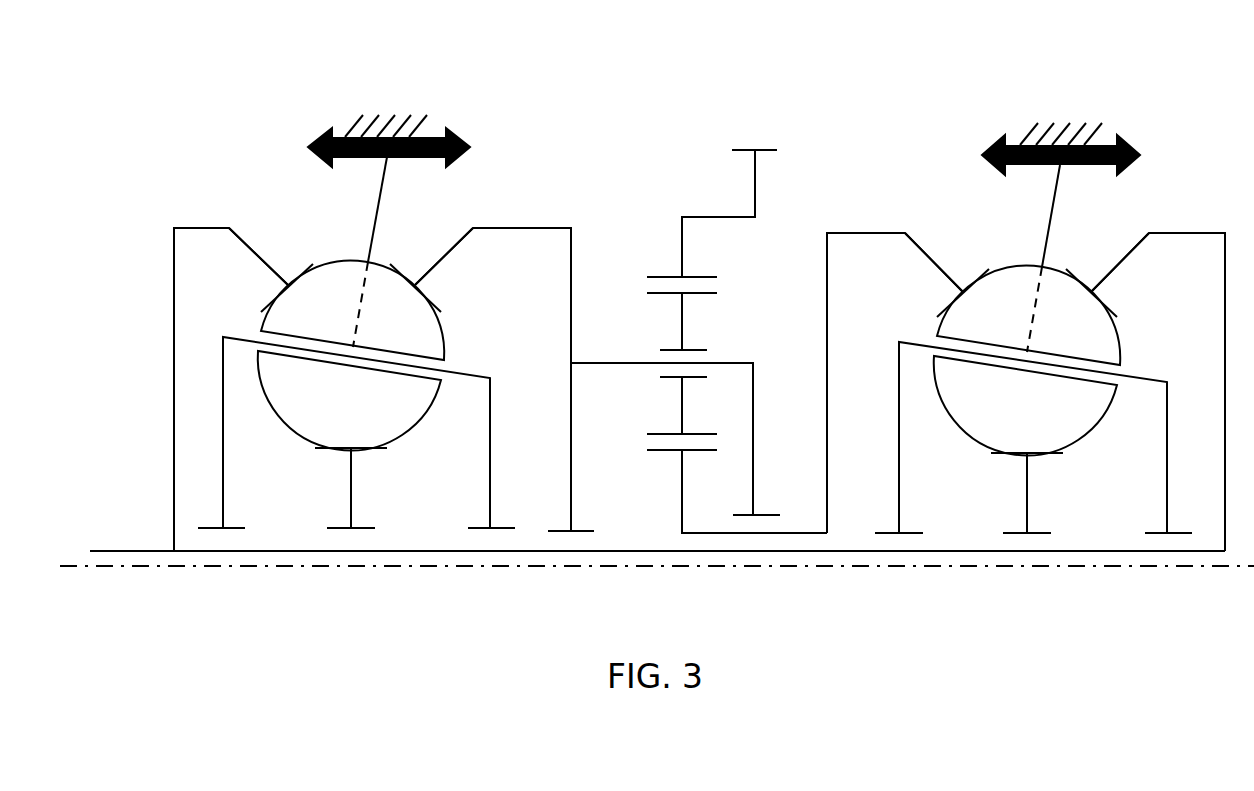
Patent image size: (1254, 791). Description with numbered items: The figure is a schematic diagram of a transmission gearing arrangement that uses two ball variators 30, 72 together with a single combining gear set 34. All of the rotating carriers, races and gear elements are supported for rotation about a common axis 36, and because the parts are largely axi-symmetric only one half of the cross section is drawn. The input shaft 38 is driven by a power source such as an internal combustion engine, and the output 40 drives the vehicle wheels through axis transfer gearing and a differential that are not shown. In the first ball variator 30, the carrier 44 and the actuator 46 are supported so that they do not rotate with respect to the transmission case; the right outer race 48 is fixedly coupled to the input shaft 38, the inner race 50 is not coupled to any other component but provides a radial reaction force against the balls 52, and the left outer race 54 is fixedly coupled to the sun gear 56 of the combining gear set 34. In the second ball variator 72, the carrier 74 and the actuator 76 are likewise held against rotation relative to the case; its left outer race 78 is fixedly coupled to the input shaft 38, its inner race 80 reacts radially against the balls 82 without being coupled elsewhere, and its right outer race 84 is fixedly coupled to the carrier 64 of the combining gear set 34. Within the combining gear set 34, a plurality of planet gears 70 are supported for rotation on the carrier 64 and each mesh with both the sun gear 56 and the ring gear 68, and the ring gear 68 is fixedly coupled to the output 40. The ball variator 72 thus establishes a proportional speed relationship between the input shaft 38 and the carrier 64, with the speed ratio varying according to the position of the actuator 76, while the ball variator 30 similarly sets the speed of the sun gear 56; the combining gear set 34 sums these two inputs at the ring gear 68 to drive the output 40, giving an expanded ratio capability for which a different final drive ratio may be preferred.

The ball variator 30 is at (955, 150).
The combining gear set 34 is at (685, 163).
The common axis 36 is at (435, 566).
The input shaft 38 is at (150, 551).
The output 40 is at (755, 175).
The carrier 44 is at (899, 453).
The actuator 46 is at (1075, 167).
The right outer race 48 is at (1115, 268).
The inner race 50 is at (1027, 510).
The balls 52 is at (1040, 421).
The left outer race 54 is at (930, 258).
The sun gear 56 is at (682, 478).
The carrier 64 is at (725, 362).
The ring gear 68 is at (682, 257).
The planet gears 70 is at (682, 308).
The ball variator 72 is at (255, 156).
The carrier 74 is at (223, 448).
The actuator 76 is at (405, 157).
The left outer race 78 is at (250, 250).
The inner race 80 is at (352, 505).
The balls 82 is at (363, 419).
The right outer race 84 is at (438, 263).